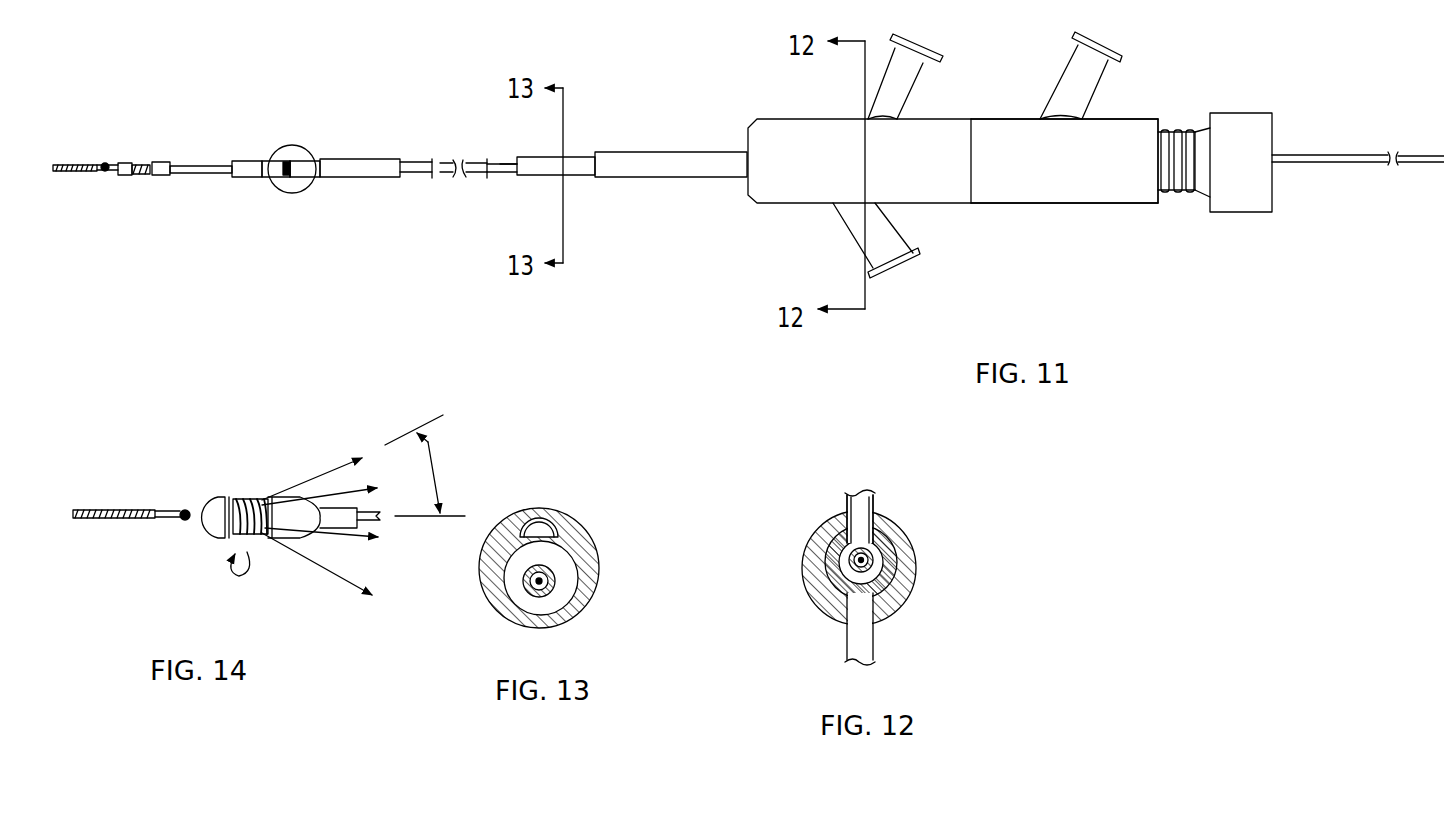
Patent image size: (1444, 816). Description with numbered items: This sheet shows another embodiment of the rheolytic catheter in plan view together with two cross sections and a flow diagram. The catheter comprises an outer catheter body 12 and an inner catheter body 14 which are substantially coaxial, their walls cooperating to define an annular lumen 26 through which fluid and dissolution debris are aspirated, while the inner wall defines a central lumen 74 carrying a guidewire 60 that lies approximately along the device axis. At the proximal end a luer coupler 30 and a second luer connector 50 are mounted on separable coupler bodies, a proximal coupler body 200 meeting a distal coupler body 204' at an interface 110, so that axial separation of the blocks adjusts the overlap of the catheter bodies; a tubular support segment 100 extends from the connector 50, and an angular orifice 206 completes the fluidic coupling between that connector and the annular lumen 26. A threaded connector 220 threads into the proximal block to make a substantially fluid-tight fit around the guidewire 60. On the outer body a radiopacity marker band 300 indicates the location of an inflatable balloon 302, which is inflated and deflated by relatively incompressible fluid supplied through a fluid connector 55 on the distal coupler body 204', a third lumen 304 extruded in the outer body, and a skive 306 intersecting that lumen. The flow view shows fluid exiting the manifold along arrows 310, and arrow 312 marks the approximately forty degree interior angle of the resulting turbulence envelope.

In FIG. 11, the outer catheter body 12 is at (573, 157).
In FIG. 13, the outer catheter body 12 is at (547, 580).
In FIG. 11, the inner catheter body 14 is at (500, 175).
In FIG. 13, the inner catheter body 14 is at (555, 577).
In FIG. 13, the annular lumen 26 is at (557, 600).
In FIG. 12, the annular lumen 26 is at (884, 558).
In FIG. 11, the luer coupler 30 is at (1058, 80).
In FIG. 11, the second luer connector 50 is at (918, 85).
In FIG. 12, the second luer connector 50 is at (875, 500).
In FIG. 11, the fluid connector 55 is at (903, 270).
In FIG. 12, the fluid connector 55 is at (878, 640).
In FIG. 14, the guidewire 60 is at (175, 510).
In FIG. 13, the guidewire 60 is at (548, 570).
In FIG. 12, the guidewire 60 is at (867, 552).
In FIG. 13, the central lumen 74 is at (520, 607).
In FIG. 12, the central lumen 74 is at (802, 587).
In FIG. 11, the tubular support segment 100 is at (647, 150).
In FIG. 11, the interface 110 is at (972, 172).
In FIG. 11, the proximal coupler body 200 is at (1080, 185).
In FIG. 11, the distal coupler body 204' is at (952, 191).
In FIG. 12, the angular orifice 206 is at (860, 517).
In FIG. 11, the threaded connector 220 is at (1255, 190).
In FIG. 11, the radiopacity marker band 300 is at (289, 165).
In FIG. 11, the inflatable balloon 302 is at (303, 190).
In FIG. 13, the third lumen 304 is at (542, 527).
In FIG. 12, the third lumen 304 is at (878, 595).
In FIG. 11, the skive 306 is at (290, 190).
In FIG. 14, the arrows 310 is at (305, 478).
In FIG. 14, the arrow 312 is at (438, 480).